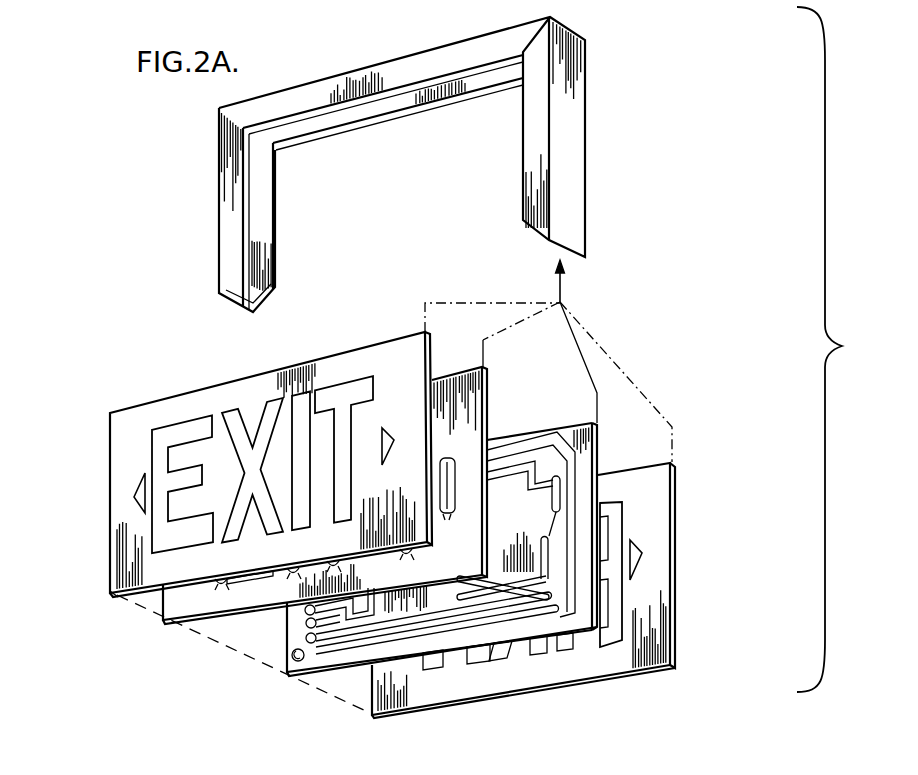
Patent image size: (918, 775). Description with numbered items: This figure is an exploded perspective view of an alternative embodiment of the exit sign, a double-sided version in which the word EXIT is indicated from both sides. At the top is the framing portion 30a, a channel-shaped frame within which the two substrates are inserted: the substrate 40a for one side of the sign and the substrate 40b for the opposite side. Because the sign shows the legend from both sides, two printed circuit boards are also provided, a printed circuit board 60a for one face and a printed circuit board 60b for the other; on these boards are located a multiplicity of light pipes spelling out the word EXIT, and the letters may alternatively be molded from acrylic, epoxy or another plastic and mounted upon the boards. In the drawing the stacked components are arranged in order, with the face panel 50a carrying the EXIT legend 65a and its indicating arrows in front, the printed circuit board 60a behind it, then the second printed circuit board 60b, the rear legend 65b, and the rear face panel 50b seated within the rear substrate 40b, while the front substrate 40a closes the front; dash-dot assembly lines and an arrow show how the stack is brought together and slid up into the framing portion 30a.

The framing portion 30a is at (585, 192).
The substrate 40a is at (109, 590).
The substrate 40b is at (675, 657).
The front face panel 50a is at (383, 428).
The rear face panel 50b is at (642, 548).
The printed circuit board 60a is at (202, 622).
The printed circuit board 60b is at (597, 437).
The EXIT legend stencil 65a is at (152, 427).
The rear legend stencil 65b is at (622, 505).